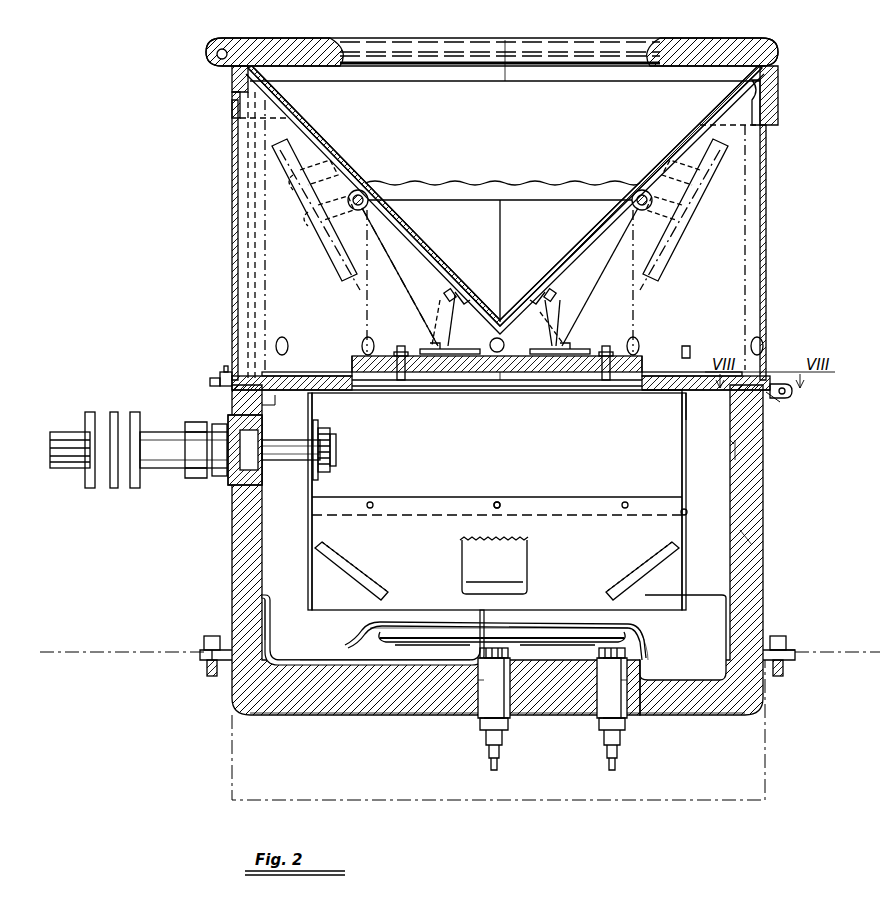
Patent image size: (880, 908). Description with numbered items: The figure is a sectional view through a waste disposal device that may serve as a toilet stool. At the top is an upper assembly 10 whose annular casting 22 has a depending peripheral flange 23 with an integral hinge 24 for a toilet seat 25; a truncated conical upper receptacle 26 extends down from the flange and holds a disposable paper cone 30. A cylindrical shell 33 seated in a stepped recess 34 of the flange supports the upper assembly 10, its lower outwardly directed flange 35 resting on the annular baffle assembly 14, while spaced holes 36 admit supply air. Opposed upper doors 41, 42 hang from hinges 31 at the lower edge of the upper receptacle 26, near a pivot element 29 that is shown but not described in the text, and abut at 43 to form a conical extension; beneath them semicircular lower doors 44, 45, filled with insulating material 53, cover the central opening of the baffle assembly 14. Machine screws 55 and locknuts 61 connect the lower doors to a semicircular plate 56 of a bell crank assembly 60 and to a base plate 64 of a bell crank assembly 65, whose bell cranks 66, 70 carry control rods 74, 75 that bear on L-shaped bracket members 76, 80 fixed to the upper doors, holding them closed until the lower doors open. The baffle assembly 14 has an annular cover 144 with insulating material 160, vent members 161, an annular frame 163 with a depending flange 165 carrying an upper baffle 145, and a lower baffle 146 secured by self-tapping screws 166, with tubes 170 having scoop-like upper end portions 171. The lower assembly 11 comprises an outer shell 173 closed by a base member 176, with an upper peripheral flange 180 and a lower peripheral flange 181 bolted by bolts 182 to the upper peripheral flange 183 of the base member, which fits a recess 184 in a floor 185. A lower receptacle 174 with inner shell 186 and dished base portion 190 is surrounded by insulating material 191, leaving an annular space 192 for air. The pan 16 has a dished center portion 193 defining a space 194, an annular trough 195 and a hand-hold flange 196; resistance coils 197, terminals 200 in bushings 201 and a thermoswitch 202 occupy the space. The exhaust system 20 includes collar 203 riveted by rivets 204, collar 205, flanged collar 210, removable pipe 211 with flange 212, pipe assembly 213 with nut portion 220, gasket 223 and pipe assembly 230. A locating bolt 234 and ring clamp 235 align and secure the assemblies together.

The upper assembly 10 is at (230, 228).
The lower assembly 11 is at (228, 540).
The annular baffle assembly 14 is at (300, 368).
The pan 16 is at (408, 620).
The exhaust system 20 is at (102, 404).
The annular casting 22 is at (228, 102).
The peripheral flange 23 is at (776, 104).
The hinge 24 is at (230, 78).
The toilet seat 25 is at (752, 44).
The upper receptacle 26 is at (680, 136).
The left roller 29 is at (350, 196).
The paper cone 30 is at (505, 45).
The hinges 31 is at (650, 196).
The cylindrical sheet metal shell 33 is at (767, 222).
The stepped recess 34 is at (756, 108).
The outwardly directed flange 35 is at (208, 382).
The spaced holes 36 is at (280, 338).
The upper door 41 is at (426, 266).
The upper door 42 is at (590, 236).
The abutment of door inner edges 43 is at (502, 252).
The lower door 44 is at (332, 265).
The lower door 45 is at (672, 276).
The insulating material 53 is at (462, 376).
The machine screws 55 is at (592, 376).
The semicircular plate 56 is at (492, 350).
The bell crank assembly 60 is at (448, 316).
The locknuts 61 is at (608, 356).
The base plate 64 is at (562, 346).
The bell crank assembly 65 is at (562, 312).
The bell cranks 66 is at (438, 318).
The bell cranks 70 is at (574, 320).
The control rod 74 is at (462, 291).
The control rod 75 is at (562, 290).
The L-shaped bracket member 76 is at (448, 296).
The L-shaped bracket member 80 is at (544, 294).
The annular cover 144 is at (682, 350).
The upper baffle 145 is at (680, 422).
The lower baffle 146 is at (684, 544).
The insulating material 160 is at (664, 388).
The vent members 161 is at (292, 374).
The annular frame 163 is at (272, 394).
The downwardly depending flange 165 is at (688, 402).
The self-tapping metal screws 166 is at (502, 506).
The tubes 170 is at (362, 576).
The scoop-like upper end portions 171 is at (314, 548).
The outer shell 173 is at (766, 480).
The lower receptacle 174 is at (726, 446).
The base member 176 is at (362, 716).
The upper peripheral flange 180 is at (768, 400).
The lower peripheral flange 181 is at (790, 650).
The bolts 182 is at (212, 636).
The upper peripheral flange 183 is at (206, 660).
The recess 184 is at (346, 798).
The floor or supporting surface 185 is at (134, 650).
The inner cylindrical shell 186 is at (731, 448).
The base portion 190 is at (546, 650).
The insulating material 191 is at (752, 544).
The annular space 192 is at (690, 490).
The center portion 193 is at (470, 612).
The space 194 is at (362, 640).
The annular trough 195 is at (322, 656).
The inwardly disposed flange 196 is at (268, 598).
The electrical resistance coils 197 is at (636, 642).
The terminals 200 is at (488, 766).
The bushings 201 is at (590, 718).
The thermoswitch 202 is at (456, 650).
The collar 203 is at (330, 432).
The rivets 204 is at (316, 422).
The collar 205 is at (216, 480).
The flanged collar 210 is at (256, 420).
The removable pipe 211 is at (292, 462).
The flange 212 is at (333, 464).
The pipe assembly 213 is at (168, 430).
The nut portion 220 is at (194, 478).
The gasket 223 is at (114, 412).
The pipe assembly 230 is at (72, 470).
The locating bolt 234 is at (226, 374).
The ring clamp 235 is at (794, 394).